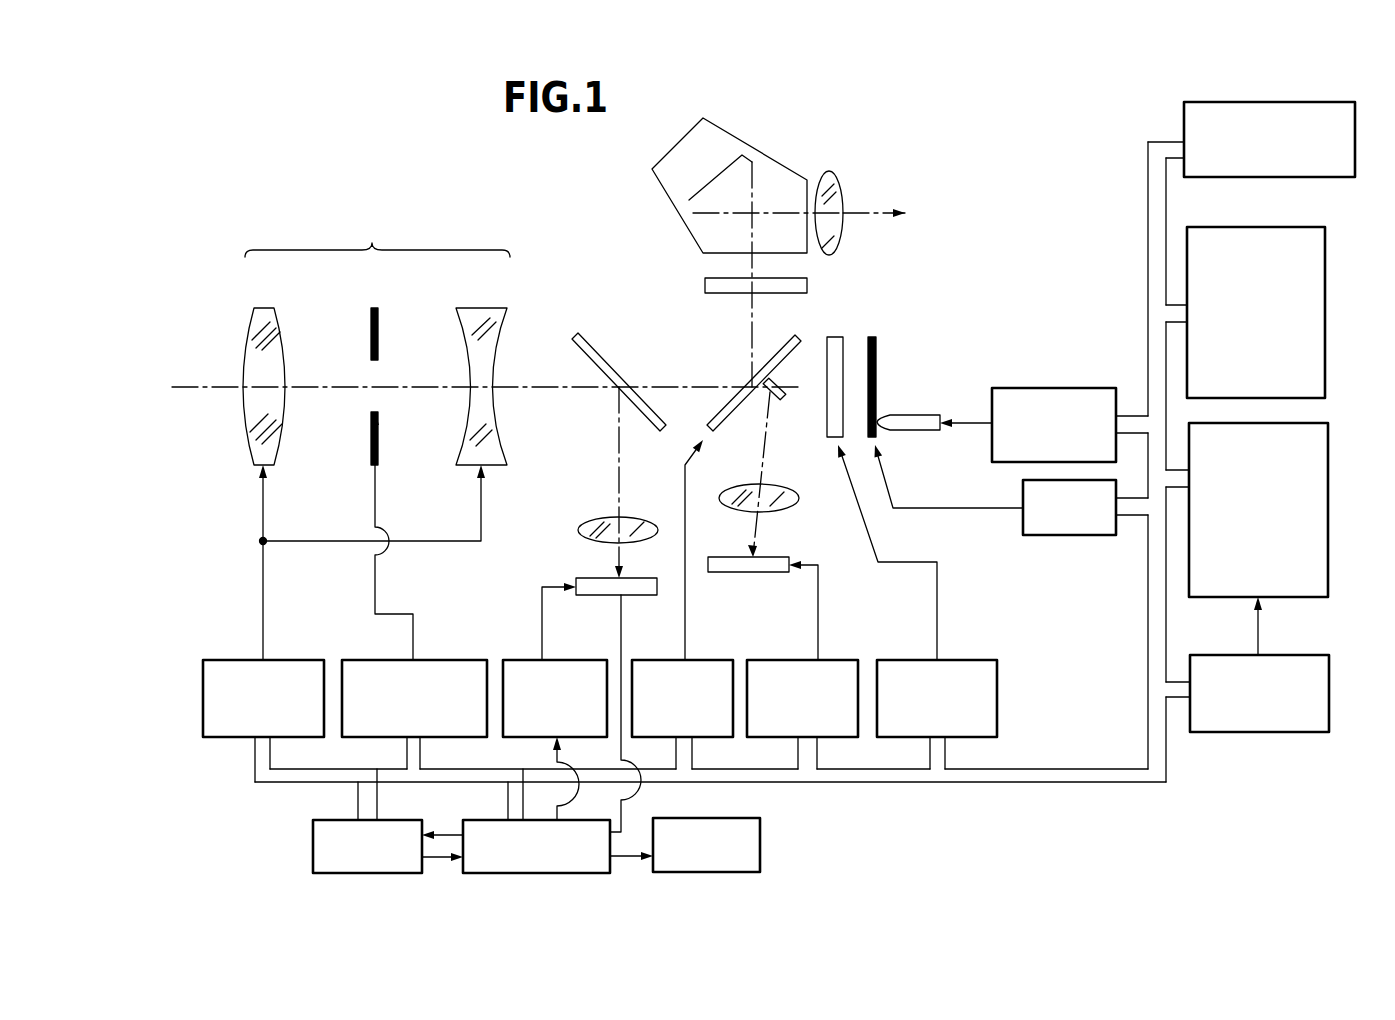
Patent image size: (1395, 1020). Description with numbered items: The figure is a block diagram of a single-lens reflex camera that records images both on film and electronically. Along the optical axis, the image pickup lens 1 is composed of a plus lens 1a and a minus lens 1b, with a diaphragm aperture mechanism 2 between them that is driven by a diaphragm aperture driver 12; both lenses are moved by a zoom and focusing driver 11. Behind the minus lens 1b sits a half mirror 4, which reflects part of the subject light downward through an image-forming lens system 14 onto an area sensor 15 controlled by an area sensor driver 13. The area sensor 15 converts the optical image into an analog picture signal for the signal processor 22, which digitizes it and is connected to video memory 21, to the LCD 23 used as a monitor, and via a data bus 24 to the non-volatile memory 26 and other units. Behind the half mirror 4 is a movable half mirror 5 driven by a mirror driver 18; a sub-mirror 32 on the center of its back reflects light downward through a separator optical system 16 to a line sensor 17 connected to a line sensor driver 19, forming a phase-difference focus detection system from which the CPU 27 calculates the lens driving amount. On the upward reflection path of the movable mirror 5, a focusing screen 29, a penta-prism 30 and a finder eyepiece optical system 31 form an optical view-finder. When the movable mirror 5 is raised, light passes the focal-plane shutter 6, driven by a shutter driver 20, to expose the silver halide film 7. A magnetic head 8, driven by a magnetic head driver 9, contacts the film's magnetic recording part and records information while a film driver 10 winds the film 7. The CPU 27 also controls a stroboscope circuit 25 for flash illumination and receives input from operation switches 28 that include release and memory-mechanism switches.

The image pickup lens 1 is at (377, 235).
The plus lens 1a is at (273, 308).
The minus lens 1b is at (505, 308).
The diaphragm aperture mechanism 2 is at (379, 328).
The half mirror 4 is at (594, 350).
The movable half mirror 5 is at (776, 352).
The focal-plane shutter 6 is at (833, 337).
The silver halide film 7 is at (870, 337).
The magnetic head 8 is at (924, 412).
The magnetic head driver 9 is at (1085, 388).
The film driver 10 is at (1037, 535).
The zoom and focusing driver 11 is at (293, 660).
The diaphragm aperture driver 12 is at (447, 660).
The area sensor driver 13 is at (550, 660).
The image-forming lens system 14 is at (582, 522).
The area sensor 15 is at (577, 578).
The separator optical system 16 is at (780, 482).
The line sensor 17 is at (775, 557).
The mirror driver 18 is at (695, 658).
The line sensor driver 19 is at (838, 658).
The shutter driver 20 is at (975, 655).
The video memory 21 is at (323, 873).
The signal processor 22 is at (500, 873).
The LCD 23 is at (683, 873).
The data bus 24 is at (1057, 782).
The stroboscope circuit 25 is at (1325, 102).
The non-volatile memory 26 is at (1307, 227).
The CPU 27 is at (1300, 423).
The operation switches 28 is at (1290, 655).
The focusing screen 29 is at (705, 285).
The penta-prism 30 is at (762, 151).
The finder eyepiece optical system 31 is at (831, 172).
The sub-mirror 32 is at (783, 395).